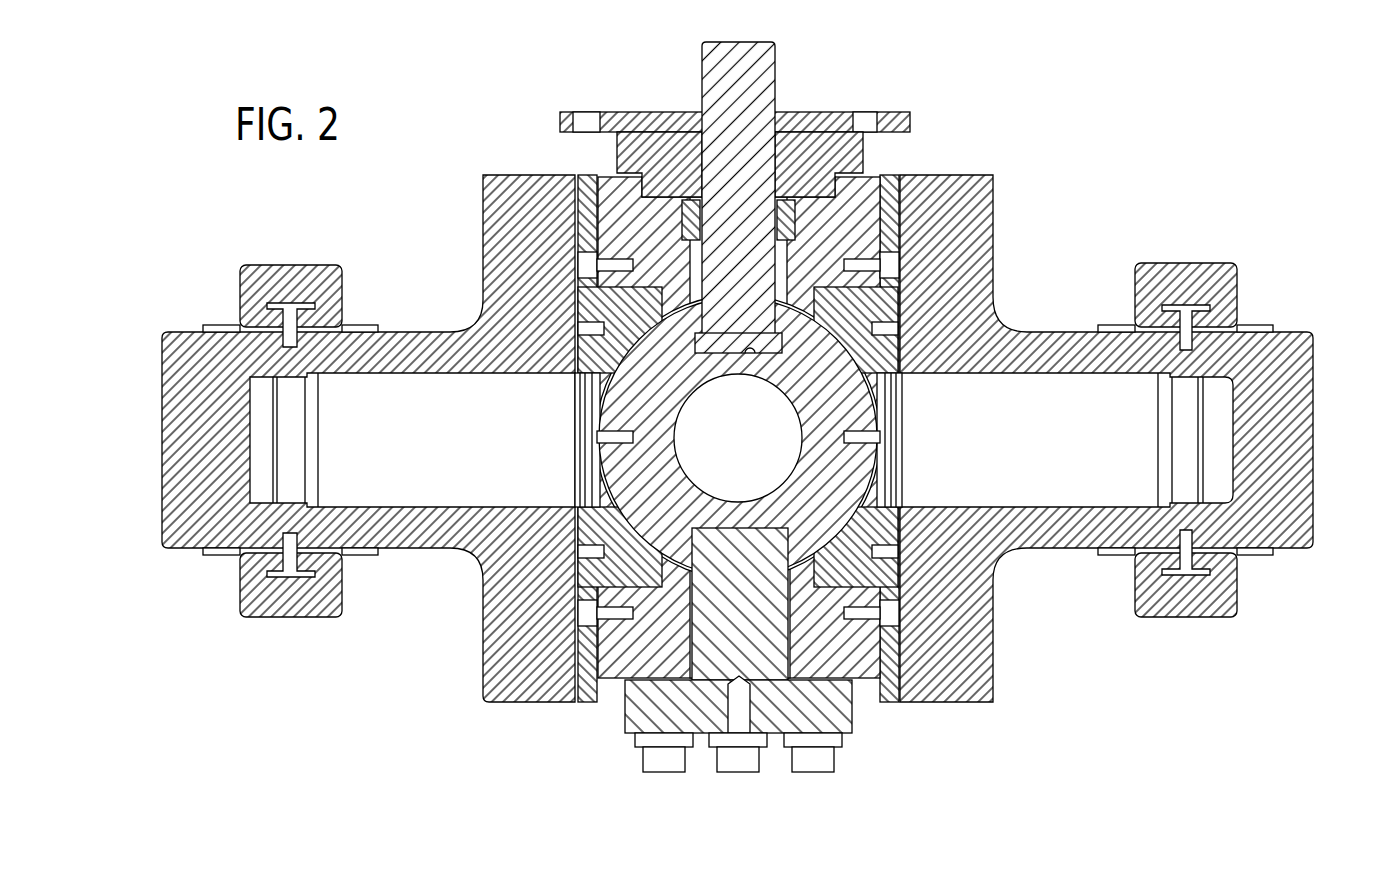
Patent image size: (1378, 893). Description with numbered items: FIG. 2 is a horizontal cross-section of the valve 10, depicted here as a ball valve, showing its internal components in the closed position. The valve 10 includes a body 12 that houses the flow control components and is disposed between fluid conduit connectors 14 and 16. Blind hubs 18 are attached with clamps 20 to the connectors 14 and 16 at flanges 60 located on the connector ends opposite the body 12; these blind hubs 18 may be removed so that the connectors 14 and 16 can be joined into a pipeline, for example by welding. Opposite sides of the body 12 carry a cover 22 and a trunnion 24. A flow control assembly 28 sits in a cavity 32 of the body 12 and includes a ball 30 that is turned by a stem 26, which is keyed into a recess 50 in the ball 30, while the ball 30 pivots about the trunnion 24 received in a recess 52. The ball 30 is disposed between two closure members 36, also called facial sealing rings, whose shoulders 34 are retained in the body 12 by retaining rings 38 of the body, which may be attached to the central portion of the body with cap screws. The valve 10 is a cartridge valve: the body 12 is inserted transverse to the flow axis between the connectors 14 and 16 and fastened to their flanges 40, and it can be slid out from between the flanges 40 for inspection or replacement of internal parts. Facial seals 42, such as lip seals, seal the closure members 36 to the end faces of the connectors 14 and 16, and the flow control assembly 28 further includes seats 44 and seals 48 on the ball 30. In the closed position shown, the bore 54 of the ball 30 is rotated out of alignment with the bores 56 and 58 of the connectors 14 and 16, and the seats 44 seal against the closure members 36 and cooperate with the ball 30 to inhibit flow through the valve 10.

The valve 10 is at (456, 88).
The body 12 is at (860, 185).
The fluid conduit connector 14 is at (472, 318).
The fluid conduit connector 16 is at (1003, 320).
The blind hub 18 is at (176, 331).
The clamp 20 is at (272, 262).
The cover 22 is at (870, 113).
The trunnion 24 is at (628, 718).
The stem 26 is at (745, 42).
The flow control assembly 28 is at (800, 300).
The ball 30 is at (600, 413).
The cavity 32 is at (680, 300).
The shoulder 34 is at (596, 270).
The closure member 36 is at (602, 494).
The retaining ring 38 is at (592, 698).
The flange 40 is at (488, 182).
The facial seal 42 is at (580, 525).
The seat 44 is at (620, 380).
The seal 48 is at (612, 448).
The recess 50 is at (750, 355).
The recess 52 is at (718, 530).
The bore 54 is at (800, 462).
The bore 56 is at (400, 378).
The bore 58 is at (1040, 378).
The flange 60 is at (310, 305).